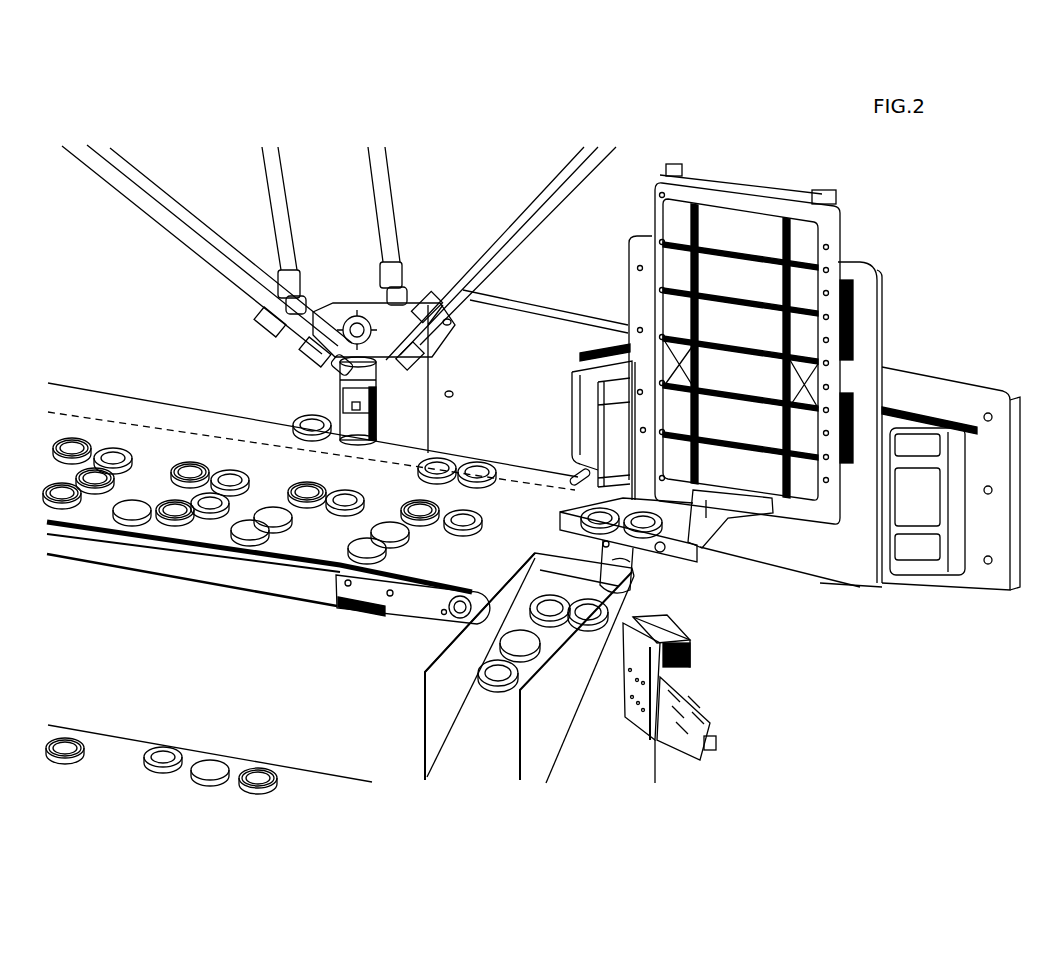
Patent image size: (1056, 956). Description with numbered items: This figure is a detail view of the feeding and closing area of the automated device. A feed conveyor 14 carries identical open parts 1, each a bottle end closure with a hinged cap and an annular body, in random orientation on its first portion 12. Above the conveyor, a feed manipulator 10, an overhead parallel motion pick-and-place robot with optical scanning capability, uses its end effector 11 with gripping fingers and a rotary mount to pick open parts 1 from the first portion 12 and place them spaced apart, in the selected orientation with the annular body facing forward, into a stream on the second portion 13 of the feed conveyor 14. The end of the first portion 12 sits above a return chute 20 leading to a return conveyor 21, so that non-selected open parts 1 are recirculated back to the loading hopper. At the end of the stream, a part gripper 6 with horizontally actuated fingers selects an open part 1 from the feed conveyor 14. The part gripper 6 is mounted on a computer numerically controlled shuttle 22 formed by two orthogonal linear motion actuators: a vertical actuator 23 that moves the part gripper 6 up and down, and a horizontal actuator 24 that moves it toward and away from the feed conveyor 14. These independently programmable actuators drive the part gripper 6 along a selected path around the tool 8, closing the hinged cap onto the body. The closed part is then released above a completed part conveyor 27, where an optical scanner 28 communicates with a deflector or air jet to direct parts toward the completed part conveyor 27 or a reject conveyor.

The open part 1 is at (312, 415).
The part gripper 6 is at (727, 523).
The tool 8 is at (627, 547).
The feed manipulator 10 is at (168, 198).
The end effector 11 is at (363, 420).
The first portion of the feed conveyor 12 is at (150, 470).
The second portion of the feed conveyor 13 is at (105, 417).
The feed conveyor 14 is at (157, 553).
The return chute 20 is at (478, 727).
The return conveyor 21 is at (107, 767).
The computer numerically controlled shuttle 22 is at (906, 318).
The vertical actuator 23 is at (740, 200).
The horizontal actuator 24 is at (935, 407).
The completed part conveyor 27 is at (617, 750).
The optical scanner 28 is at (690, 653).